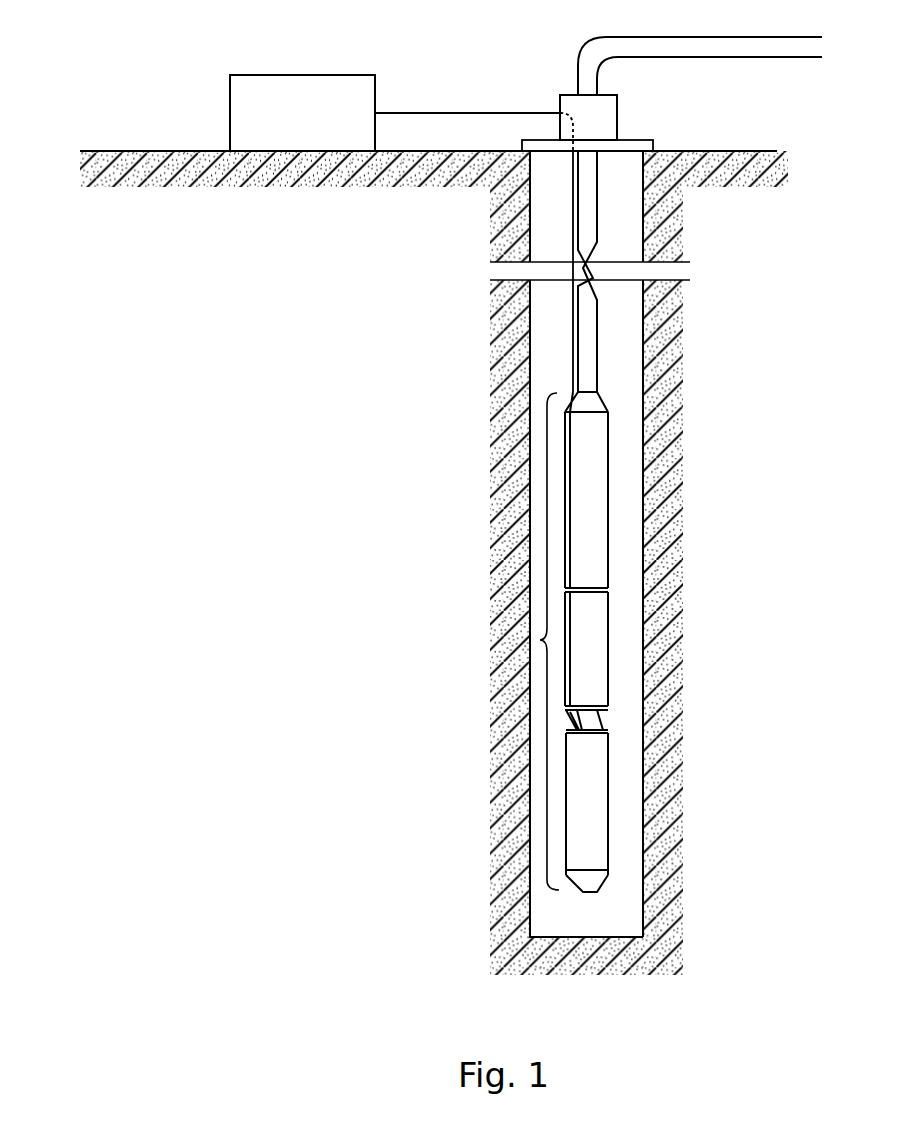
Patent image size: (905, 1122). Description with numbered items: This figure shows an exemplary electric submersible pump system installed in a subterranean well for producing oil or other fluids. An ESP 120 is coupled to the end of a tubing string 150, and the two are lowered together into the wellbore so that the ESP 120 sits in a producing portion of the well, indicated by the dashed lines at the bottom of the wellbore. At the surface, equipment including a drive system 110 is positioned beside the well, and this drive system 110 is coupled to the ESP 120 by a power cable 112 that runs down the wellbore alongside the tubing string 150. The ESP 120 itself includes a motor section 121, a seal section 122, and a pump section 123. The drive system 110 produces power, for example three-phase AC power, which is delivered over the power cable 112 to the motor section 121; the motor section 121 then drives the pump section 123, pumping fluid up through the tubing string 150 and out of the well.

The drive system 110 is at (304, 74).
The power cable 112 is at (466, 111).
The tubing string 150 is at (598, 345).
The ESP 120 is at (585, 642).
The motor section 121 is at (608, 812).
The seal section 122 is at (607, 639).
The pump section 123 is at (605, 489).